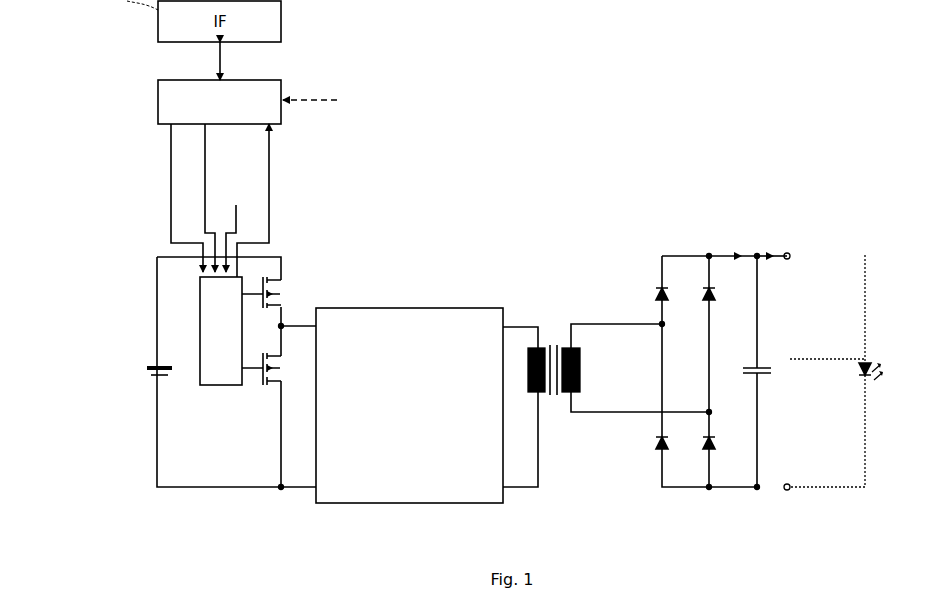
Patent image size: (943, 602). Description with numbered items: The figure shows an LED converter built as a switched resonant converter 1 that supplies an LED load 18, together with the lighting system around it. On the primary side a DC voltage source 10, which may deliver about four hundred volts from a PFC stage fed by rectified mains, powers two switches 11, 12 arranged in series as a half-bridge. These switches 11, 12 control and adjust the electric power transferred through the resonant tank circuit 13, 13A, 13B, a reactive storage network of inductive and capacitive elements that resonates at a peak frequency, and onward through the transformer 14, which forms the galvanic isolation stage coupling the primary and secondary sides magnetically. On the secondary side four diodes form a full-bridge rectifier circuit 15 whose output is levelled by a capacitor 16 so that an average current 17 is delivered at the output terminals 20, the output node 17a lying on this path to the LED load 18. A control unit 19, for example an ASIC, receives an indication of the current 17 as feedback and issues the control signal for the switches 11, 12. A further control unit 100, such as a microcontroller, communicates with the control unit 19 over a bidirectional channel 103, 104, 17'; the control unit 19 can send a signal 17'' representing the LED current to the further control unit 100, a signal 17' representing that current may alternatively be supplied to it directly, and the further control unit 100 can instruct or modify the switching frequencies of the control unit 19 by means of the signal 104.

The switched resonant converter 1 is at (438, 187).
The DC voltage source 10 is at (154, 366).
The switch 11 is at (283, 269).
The switch 12 is at (258, 388).
The resonant tank circuit 13 is at (410, 378).
The resonant tank circuit 13A is at (409, 405).
The resonant tank circuit 13B is at (400, 308).
The transformer 14 is at (566, 322).
The full-bridge rectifier circuit 15 is at (687, 255).
The capacitor 16 is at (764, 366).
The current 17 is at (530, 224).
The output connection node 17a is at (745, 253).
The signal 17' is at (329, 74).
The signal 17'' is at (289, 199).
The LED load 18 is at (875, 358).
The control unit 19 is at (207, 379).
The output terminals 20 is at (791, 252).
The further control unit 100 is at (158, 96).
The bidirectional channel 103 is at (202, 222).
The signal 104 is at (168, 170).